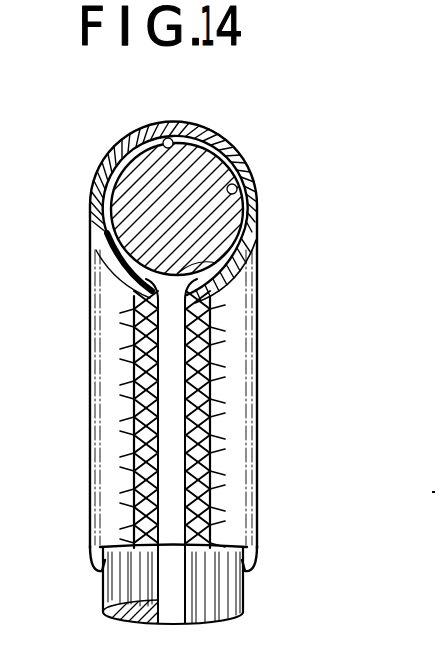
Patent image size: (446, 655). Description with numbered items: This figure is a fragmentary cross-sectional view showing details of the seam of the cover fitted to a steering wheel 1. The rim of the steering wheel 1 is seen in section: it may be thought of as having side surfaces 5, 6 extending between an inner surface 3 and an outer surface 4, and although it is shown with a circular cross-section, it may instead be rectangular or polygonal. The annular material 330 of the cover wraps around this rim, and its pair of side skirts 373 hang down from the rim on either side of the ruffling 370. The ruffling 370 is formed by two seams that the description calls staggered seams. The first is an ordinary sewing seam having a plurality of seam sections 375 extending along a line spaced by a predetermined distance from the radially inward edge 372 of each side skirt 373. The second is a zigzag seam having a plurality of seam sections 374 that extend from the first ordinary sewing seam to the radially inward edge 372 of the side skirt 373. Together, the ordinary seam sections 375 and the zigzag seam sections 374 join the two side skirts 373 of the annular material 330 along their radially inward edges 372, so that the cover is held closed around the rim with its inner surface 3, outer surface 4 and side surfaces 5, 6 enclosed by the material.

The steering wheel 1 is at (200, 176).
The inner surface 3 is at (218, 263).
The outer surface 4 is at (168, 137).
The side surface 5 is at (100, 185).
The side surface 6 is at (240, 193).
The annular material 330 is at (97, 162).
The ruffling 370 is at (128, 385).
The radially inward edge 372 is at (130, 530).
The side skirt 373 is at (120, 305).
The seam section 374 is at (130, 492).
The seam section 375 is at (130, 412).